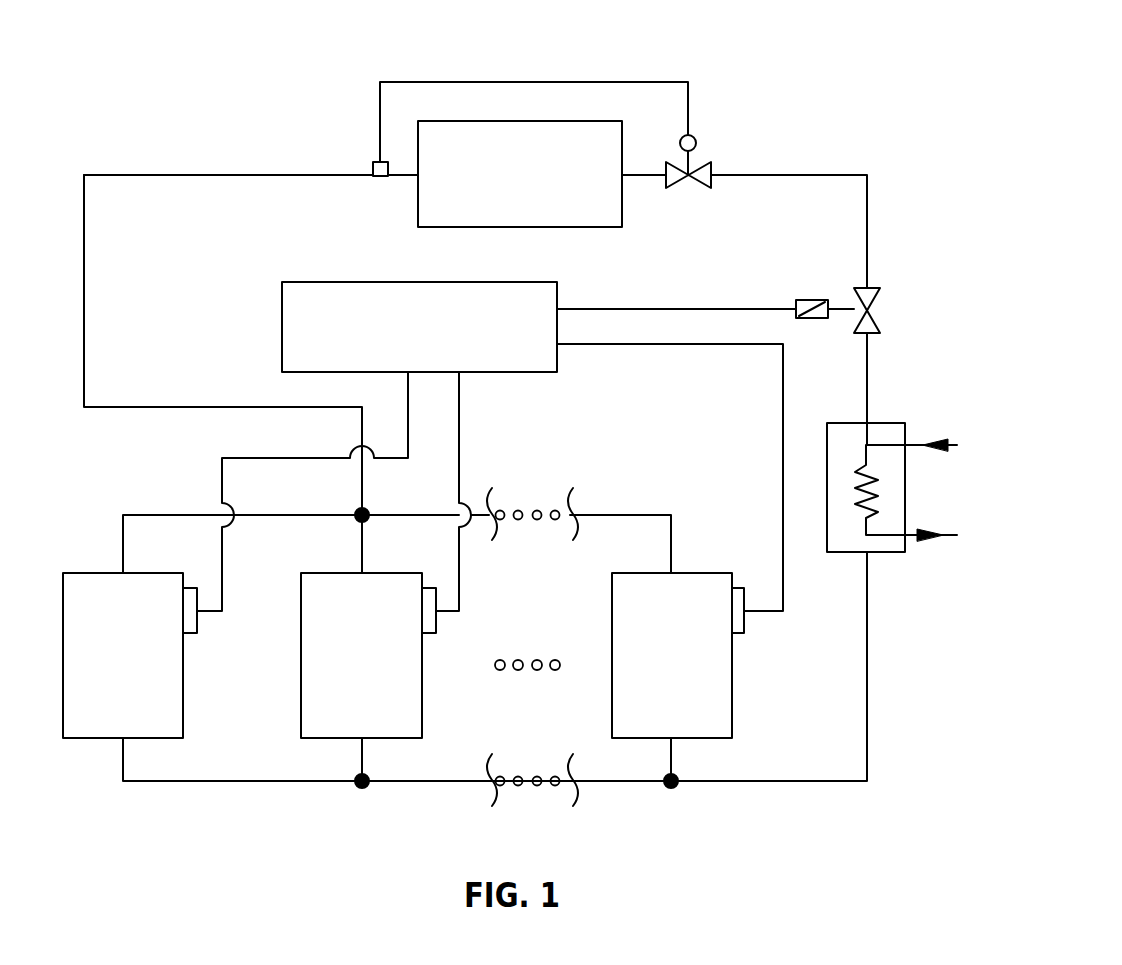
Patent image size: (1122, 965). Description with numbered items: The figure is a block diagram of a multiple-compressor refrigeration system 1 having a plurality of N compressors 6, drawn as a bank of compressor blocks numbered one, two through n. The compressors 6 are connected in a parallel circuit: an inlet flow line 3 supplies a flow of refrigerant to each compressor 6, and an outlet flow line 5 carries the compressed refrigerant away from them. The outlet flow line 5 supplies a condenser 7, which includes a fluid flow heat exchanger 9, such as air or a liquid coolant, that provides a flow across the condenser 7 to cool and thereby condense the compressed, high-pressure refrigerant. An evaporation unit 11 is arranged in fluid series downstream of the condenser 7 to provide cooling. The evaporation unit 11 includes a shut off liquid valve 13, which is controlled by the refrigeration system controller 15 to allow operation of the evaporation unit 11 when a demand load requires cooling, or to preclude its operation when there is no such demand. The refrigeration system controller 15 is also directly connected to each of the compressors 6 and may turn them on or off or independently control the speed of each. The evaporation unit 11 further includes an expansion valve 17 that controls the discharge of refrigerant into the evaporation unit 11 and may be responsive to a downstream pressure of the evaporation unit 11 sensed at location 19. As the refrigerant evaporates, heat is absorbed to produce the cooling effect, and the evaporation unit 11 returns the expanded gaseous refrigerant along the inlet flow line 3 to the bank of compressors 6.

The multiple-compressor refrigeration system 1 is at (843, 60).
The inlet flow line 3 is at (133, 405).
The outlet flow line 5 is at (797, 778).
The compressor 6 is at (98, 573).
The condenser 7 is at (888, 423).
The fluid flow heat exchanger 9 is at (872, 497).
The evaporation unit 11 is at (418, 207).
The shut off liquid valve 13 is at (860, 288).
The refrigeration system controller 15 is at (282, 352).
The expansion valve 17 is at (697, 165).
The location 19 is at (378, 160).